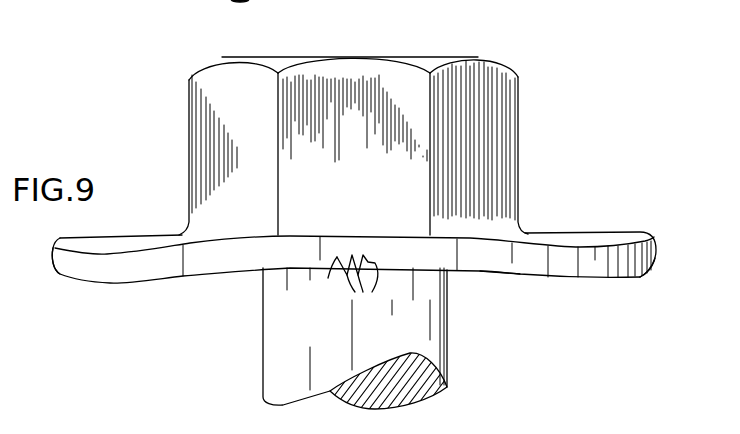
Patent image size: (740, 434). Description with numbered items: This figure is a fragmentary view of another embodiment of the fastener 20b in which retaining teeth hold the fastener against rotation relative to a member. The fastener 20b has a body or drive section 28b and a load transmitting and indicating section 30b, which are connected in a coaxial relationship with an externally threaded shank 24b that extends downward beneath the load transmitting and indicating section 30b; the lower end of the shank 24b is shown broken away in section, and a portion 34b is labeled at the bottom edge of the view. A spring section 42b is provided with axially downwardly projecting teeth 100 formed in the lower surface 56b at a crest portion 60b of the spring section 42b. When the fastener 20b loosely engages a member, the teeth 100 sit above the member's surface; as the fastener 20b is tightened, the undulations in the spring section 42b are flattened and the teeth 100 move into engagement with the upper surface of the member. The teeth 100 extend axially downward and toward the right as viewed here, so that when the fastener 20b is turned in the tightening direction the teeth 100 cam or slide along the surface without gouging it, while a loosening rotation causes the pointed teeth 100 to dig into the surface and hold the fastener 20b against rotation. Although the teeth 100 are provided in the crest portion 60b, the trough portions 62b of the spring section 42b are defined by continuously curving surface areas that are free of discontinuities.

The fastener 20b is at (633, 31).
The body or drive section 28b is at (478, 4).
The load transmitting and indicating section 30b is at (366, 247).
The spring section 42b is at (632, 234).
The lower surface 56b is at (547, 276).
The trough portions 62b is at (89, 282).
The shank 24b is at (263, 364).
The crest portion 60b is at (339, 262).
The teeth 100 is at (375, 263).
The threaded portion 34b is at (104, 428).